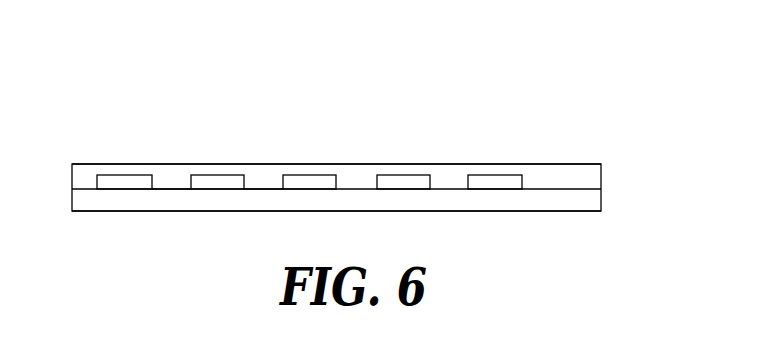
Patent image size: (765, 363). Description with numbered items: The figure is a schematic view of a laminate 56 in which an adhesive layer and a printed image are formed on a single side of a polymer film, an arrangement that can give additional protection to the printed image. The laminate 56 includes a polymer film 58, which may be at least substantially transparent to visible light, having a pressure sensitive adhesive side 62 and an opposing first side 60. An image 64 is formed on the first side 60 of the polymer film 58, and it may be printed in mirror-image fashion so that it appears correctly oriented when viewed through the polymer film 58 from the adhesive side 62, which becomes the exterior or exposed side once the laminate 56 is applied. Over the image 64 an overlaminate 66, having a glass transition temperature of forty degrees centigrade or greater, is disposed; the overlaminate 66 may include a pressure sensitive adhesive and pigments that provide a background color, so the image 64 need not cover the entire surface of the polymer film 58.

The laminate 56 is at (152, 98).
The polymer film 58 is at (157, 210).
The first side 60 is at (263, 189).
The pressure sensitive adhesive side 62 is at (572, 211).
The printed image 64 is at (380, 175).
The overlaminate 66 is at (567, 175).